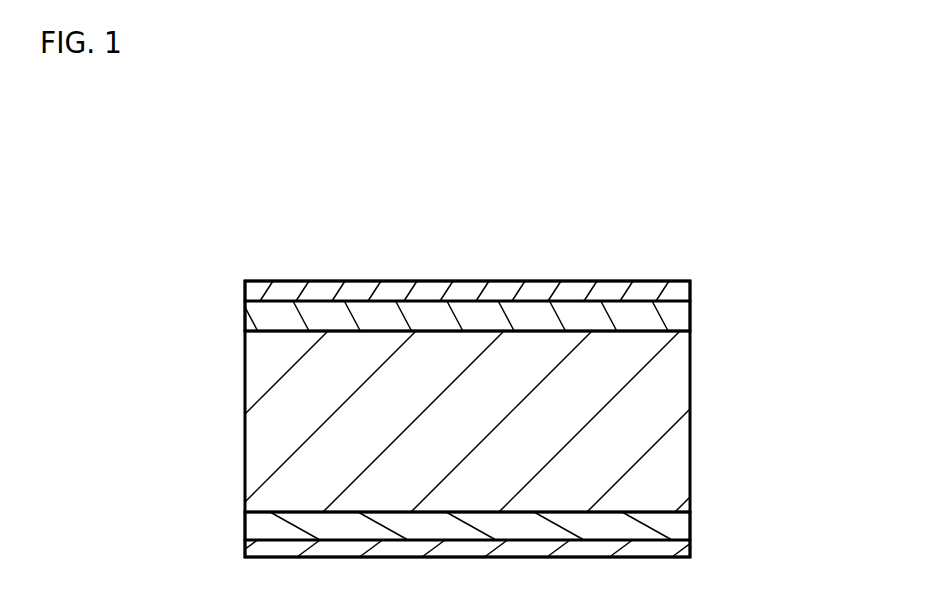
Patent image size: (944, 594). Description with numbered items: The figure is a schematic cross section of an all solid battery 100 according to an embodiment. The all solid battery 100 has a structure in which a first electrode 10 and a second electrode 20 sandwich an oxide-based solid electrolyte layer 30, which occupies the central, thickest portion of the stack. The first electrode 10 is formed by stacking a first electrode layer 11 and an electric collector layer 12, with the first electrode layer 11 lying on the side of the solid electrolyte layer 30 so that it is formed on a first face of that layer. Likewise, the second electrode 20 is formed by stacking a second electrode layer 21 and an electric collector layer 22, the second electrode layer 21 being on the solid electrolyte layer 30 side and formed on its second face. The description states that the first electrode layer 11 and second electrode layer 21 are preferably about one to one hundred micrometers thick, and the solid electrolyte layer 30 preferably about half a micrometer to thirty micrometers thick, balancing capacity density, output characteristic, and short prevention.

The all solid battery 100 is at (884, 180).
The first electrode 10 is at (790, 498).
The first electrode layer 11 is at (678, 525).
The electric collector layer 12 is at (678, 552).
The second electrode 20 is at (790, 262).
The second electrode layer 21 is at (680, 318).
The electric collector layer 22 is at (680, 288).
The solid electrolyte layer 30 is at (673, 430).